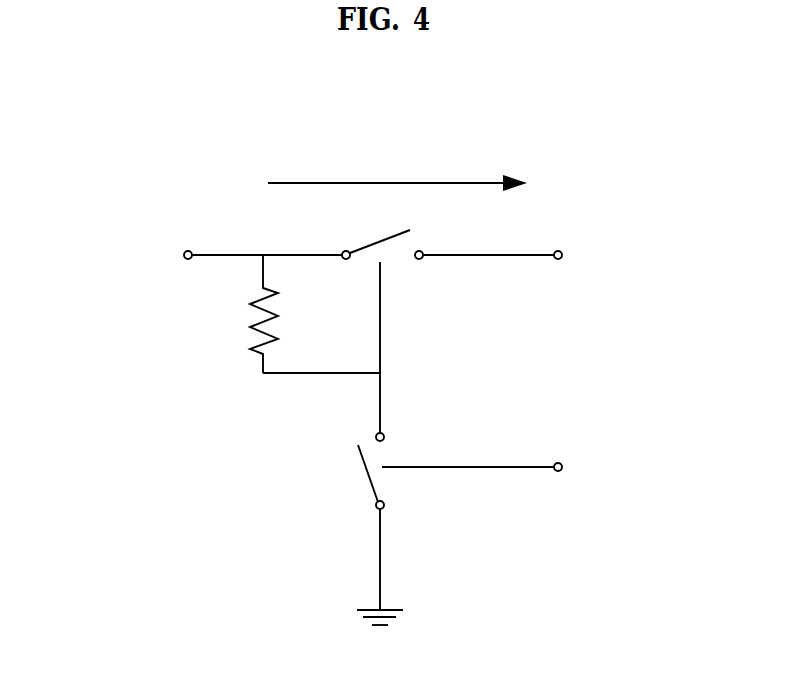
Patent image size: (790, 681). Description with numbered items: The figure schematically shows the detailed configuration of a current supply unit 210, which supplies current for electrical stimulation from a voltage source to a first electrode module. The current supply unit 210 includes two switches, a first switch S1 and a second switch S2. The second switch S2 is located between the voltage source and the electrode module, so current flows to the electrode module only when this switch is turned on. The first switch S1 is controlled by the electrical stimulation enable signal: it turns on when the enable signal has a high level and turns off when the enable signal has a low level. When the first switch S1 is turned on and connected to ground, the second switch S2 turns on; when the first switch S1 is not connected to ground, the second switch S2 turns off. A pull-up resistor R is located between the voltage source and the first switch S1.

The current supply unit 210 is at (125, 110).
The second switch S2 is at (382, 230).
The first switch S1 is at (350, 471).
The pull-up resistor R is at (249, 314).